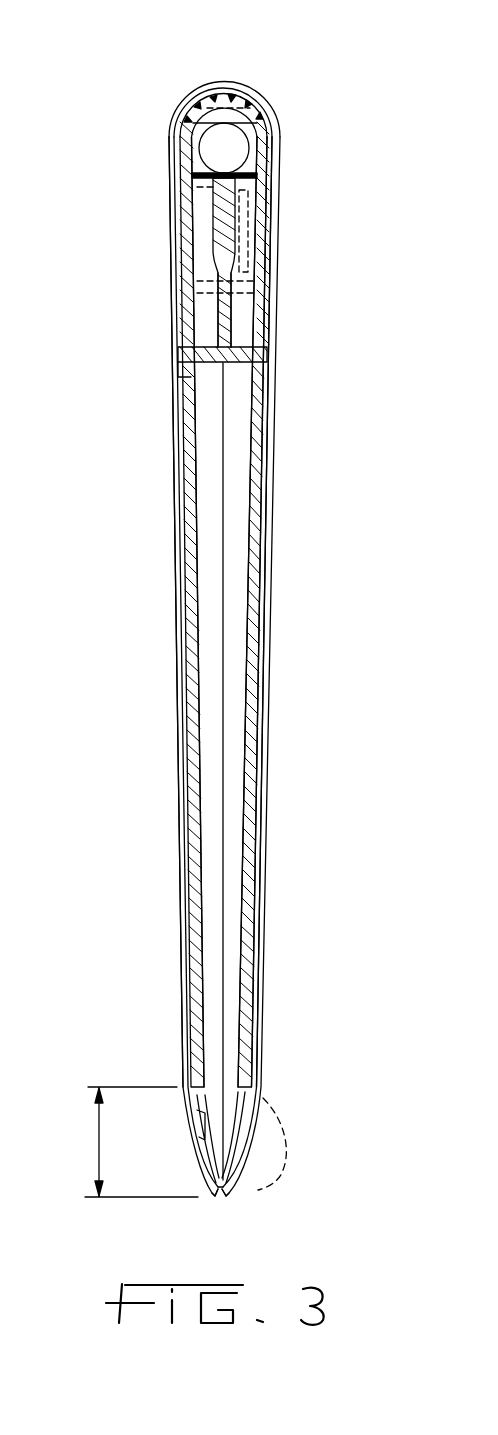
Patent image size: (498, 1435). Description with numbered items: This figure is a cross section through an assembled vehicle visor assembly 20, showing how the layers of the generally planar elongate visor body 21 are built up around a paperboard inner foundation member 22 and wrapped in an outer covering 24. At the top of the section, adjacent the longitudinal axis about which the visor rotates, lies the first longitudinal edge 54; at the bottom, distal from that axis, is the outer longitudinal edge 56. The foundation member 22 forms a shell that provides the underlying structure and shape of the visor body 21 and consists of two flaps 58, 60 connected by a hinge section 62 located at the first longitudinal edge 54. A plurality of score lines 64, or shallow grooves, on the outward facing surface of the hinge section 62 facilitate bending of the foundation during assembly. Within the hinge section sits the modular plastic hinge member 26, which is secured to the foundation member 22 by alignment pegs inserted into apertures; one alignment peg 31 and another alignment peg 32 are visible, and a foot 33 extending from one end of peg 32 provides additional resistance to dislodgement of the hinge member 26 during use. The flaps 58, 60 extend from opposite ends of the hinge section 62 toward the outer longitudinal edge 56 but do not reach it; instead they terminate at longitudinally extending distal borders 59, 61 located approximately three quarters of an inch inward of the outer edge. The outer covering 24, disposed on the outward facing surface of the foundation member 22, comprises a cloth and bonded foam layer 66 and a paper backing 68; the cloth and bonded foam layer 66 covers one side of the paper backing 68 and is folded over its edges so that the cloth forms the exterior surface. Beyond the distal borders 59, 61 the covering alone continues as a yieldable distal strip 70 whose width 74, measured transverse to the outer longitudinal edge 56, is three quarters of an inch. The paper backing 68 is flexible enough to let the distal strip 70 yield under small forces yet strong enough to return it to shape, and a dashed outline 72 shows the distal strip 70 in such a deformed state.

The visor assembly 20 is at (160, 98).
The visor body 21 is at (175, 916).
The foundation member 22 is at (192, 472).
The outer covering 24 is at (192, 634).
The hinge member 26 is at (205, 243).
The alignment peg 31 is at (258, 355).
The alignment peg 32 is at (208, 355).
The foot 33 is at (178, 352).
The first longitudinal edge 54 is at (223, 80).
The outer longitudinal edge 56 is at (218, 1197).
The flap 58 is at (195, 755).
The distal border 59 is at (180, 1092).
The flap 60 is at (250, 797).
The distal border 61 is at (262, 1097).
The hinge section 62 is at (205, 90).
The score lines 64 is at (258, 95).
The cloth and bonded foam layer 66 is at (263, 958).
The paper backing 68 is at (258, 1010).
The distal strip 70 is at (188, 1174).
The dashed outline 72 is at (283, 1160).
The width 74 is at (98, 1145).